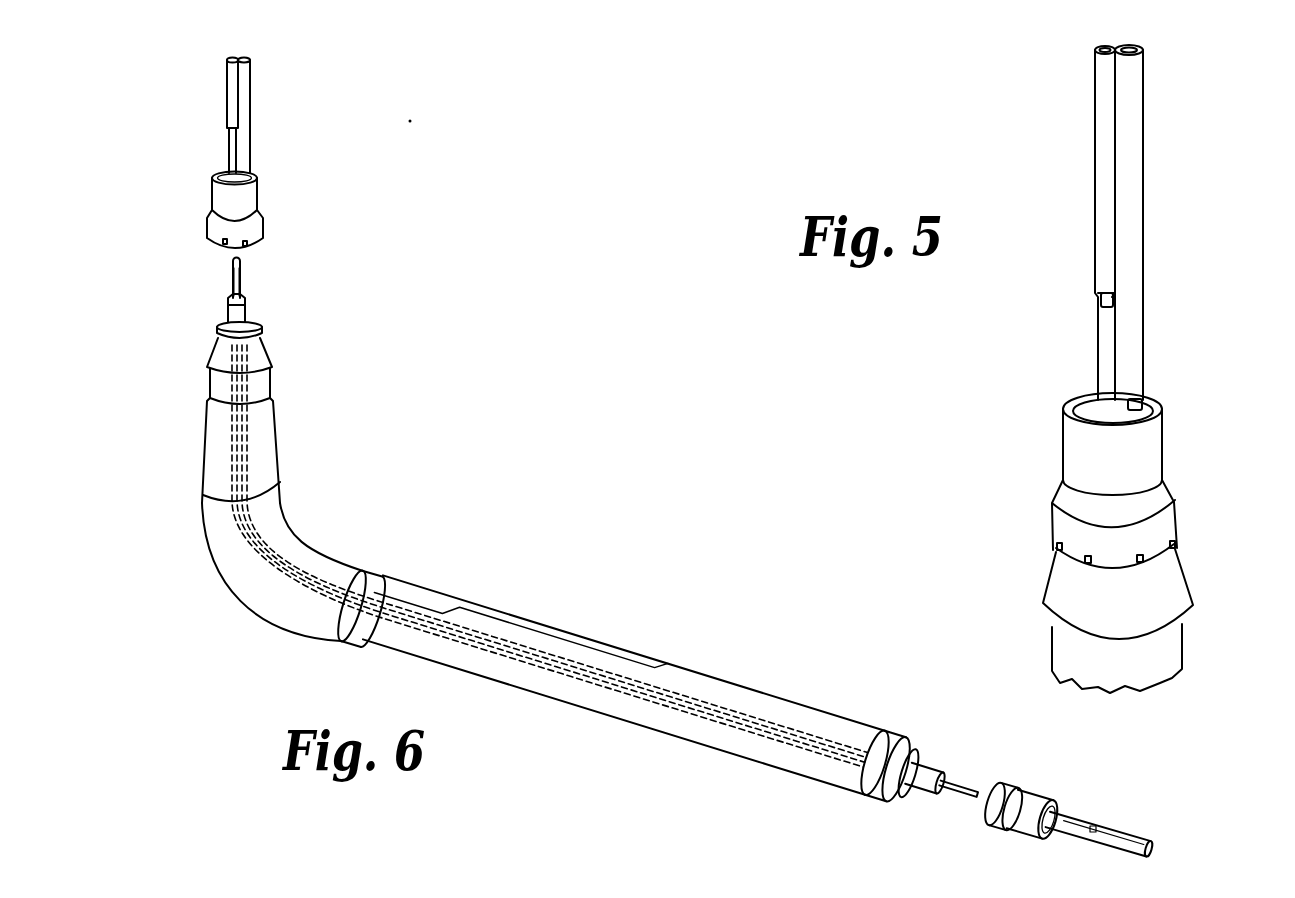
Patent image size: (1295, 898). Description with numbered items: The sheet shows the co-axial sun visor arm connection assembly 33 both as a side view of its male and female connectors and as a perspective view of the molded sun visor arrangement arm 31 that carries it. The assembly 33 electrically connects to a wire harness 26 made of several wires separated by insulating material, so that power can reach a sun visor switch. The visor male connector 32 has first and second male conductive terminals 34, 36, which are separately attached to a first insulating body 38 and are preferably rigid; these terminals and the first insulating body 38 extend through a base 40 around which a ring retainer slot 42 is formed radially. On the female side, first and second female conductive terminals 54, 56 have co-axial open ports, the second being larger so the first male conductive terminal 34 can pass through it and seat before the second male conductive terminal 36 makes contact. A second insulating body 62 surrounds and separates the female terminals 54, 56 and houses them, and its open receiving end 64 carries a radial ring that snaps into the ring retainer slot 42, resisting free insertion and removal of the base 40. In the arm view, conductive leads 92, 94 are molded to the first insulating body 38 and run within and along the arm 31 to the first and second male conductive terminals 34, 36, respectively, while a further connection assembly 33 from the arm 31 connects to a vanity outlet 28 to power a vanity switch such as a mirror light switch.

In FIG. 6, the wire harness 26 is at (228, 101).
In FIG. 5, the wire harness 26 is at (1094, 190).
In FIG. 6, the vanity outlet 28 is at (1021, 780).
In FIG. 6, the sun visor arrangement arm 31 is at (531, 574).
In FIG. 6, the visor male connector 32 is at (243, 328).
In FIG. 6, the co-axial sun visor arm connection assembly 33 is at (241, 193).
In FIG. 6, the first male conductive terminal 34 is at (241, 283).
In FIG. 6, the second male conductive terminal 36 is at (246, 308).
In FIG. 6, the first insulating body 38 is at (231, 300).
In FIG. 6, the base 40 is at (218, 329).
In FIG. 6, the ring retainer slot 42 is at (261, 333).
In FIG. 5, the first female conductive terminal 54 is at (1098, 297).
In FIG. 5, the second female conductive terminal 56 is at (1142, 403).
In FIG. 6, the second insulating body 62 is at (212, 185).
In FIG. 5, the second insulating body 62 is at (1164, 452).
In FIG. 6, the open receiving end 64 is at (257, 247).
In FIG. 5, the open receiving end 64 is at (1168, 550).
In FIG. 6, the first conductive lead 92 is at (215, 556).
In FIG. 6, the second conductive lead 94 is at (245, 596).